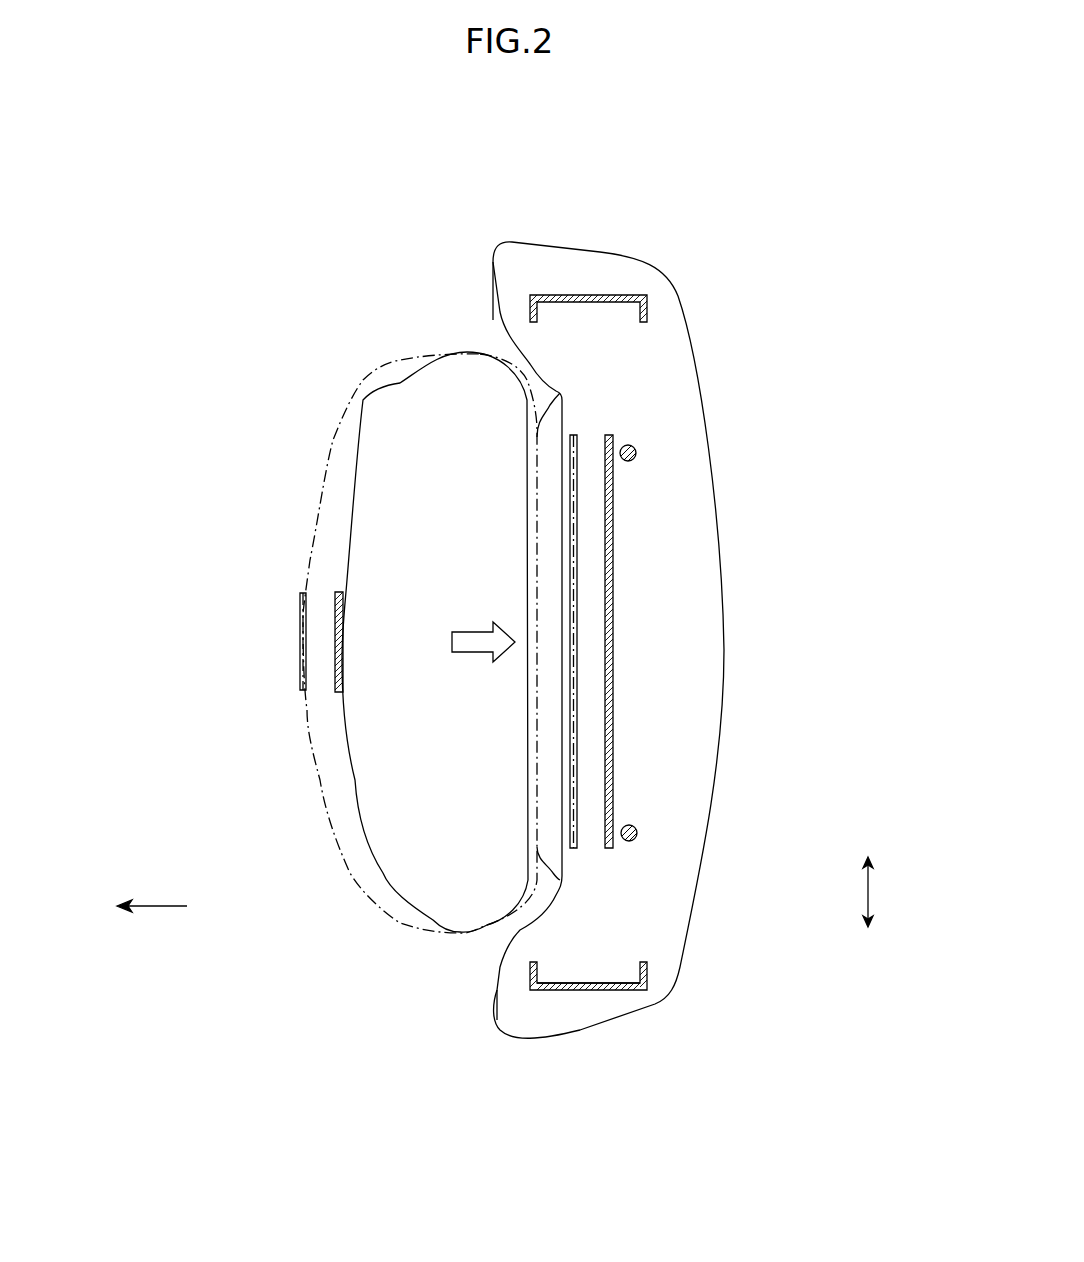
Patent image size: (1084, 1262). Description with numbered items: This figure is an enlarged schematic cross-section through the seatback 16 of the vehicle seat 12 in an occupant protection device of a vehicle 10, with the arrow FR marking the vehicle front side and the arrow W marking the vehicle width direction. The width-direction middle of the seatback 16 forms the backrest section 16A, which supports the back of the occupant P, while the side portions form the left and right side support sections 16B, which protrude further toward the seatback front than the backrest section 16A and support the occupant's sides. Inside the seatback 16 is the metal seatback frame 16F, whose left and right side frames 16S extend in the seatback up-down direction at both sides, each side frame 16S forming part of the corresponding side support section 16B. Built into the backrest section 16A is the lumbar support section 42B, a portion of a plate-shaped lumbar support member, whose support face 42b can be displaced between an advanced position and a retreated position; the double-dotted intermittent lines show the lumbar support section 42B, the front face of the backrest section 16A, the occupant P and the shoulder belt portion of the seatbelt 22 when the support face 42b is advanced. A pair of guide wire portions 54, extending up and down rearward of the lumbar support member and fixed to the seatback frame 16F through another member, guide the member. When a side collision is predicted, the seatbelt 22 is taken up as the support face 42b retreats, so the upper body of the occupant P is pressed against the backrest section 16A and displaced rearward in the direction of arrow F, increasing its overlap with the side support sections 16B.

The vehicle 10 is at (670, 863).
The vehicle seat 12 is at (762, 313).
The seatback 16 is at (715, 388).
The backrest section 16A is at (562, 577).
The side support section 16B is at (507, 296).
The side frame 16S is at (585, 296).
The seatback frame 16F is at (552, 998).
The guide wire portion 54 is at (633, 447).
The seatbelt 22 is at (333, 600).
The occupant P is at (387, 410).
The lumbar support section 42B is at (602, 517).
The support face 42b is at (572, 715).
The arrow F is at (475, 630).
The arrow W is at (871, 888).
The arrow FR is at (132, 907).